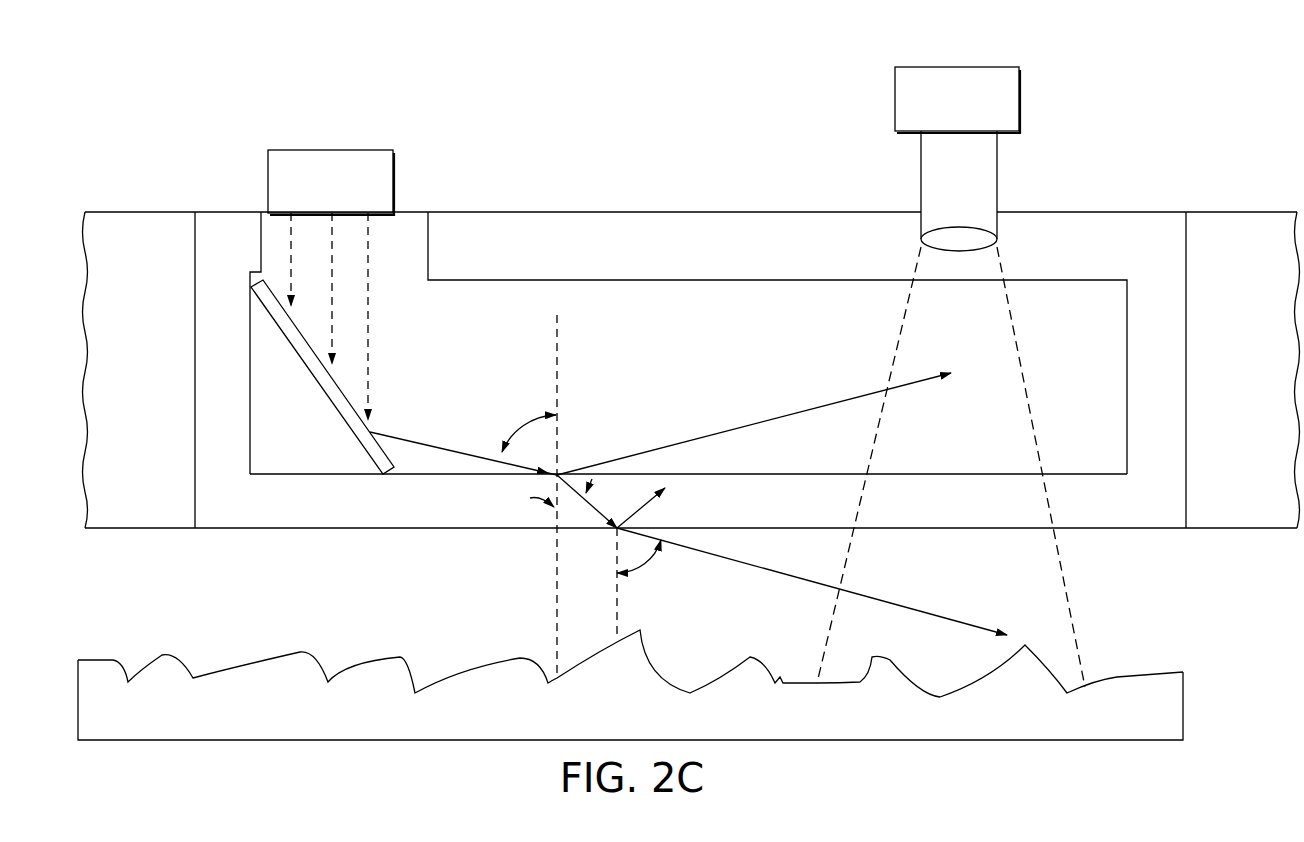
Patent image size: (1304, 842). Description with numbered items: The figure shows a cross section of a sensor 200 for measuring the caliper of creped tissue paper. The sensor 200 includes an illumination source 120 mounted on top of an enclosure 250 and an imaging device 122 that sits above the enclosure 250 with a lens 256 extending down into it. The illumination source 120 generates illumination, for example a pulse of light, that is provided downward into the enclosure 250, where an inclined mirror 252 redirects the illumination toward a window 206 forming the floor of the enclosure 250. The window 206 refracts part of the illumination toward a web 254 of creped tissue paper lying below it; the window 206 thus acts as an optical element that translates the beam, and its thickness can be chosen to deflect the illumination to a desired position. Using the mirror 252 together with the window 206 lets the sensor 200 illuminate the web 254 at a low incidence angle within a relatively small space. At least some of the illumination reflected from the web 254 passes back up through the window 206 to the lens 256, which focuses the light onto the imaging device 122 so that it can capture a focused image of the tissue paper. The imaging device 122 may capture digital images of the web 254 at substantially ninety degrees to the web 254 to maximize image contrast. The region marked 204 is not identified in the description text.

The sensor 200 is at (326, 83).
The enclosure 250 is at (750, 212).
The illumination source 120 is at (268, 183).
The imaging device 122 is at (1019, 98).
The lens 256 is at (997, 195).
The mirror 252 is at (318, 383).
The window 206 is at (448, 528).
The sample 204 is at (258, 559).
The web 254 is at (151, 647).